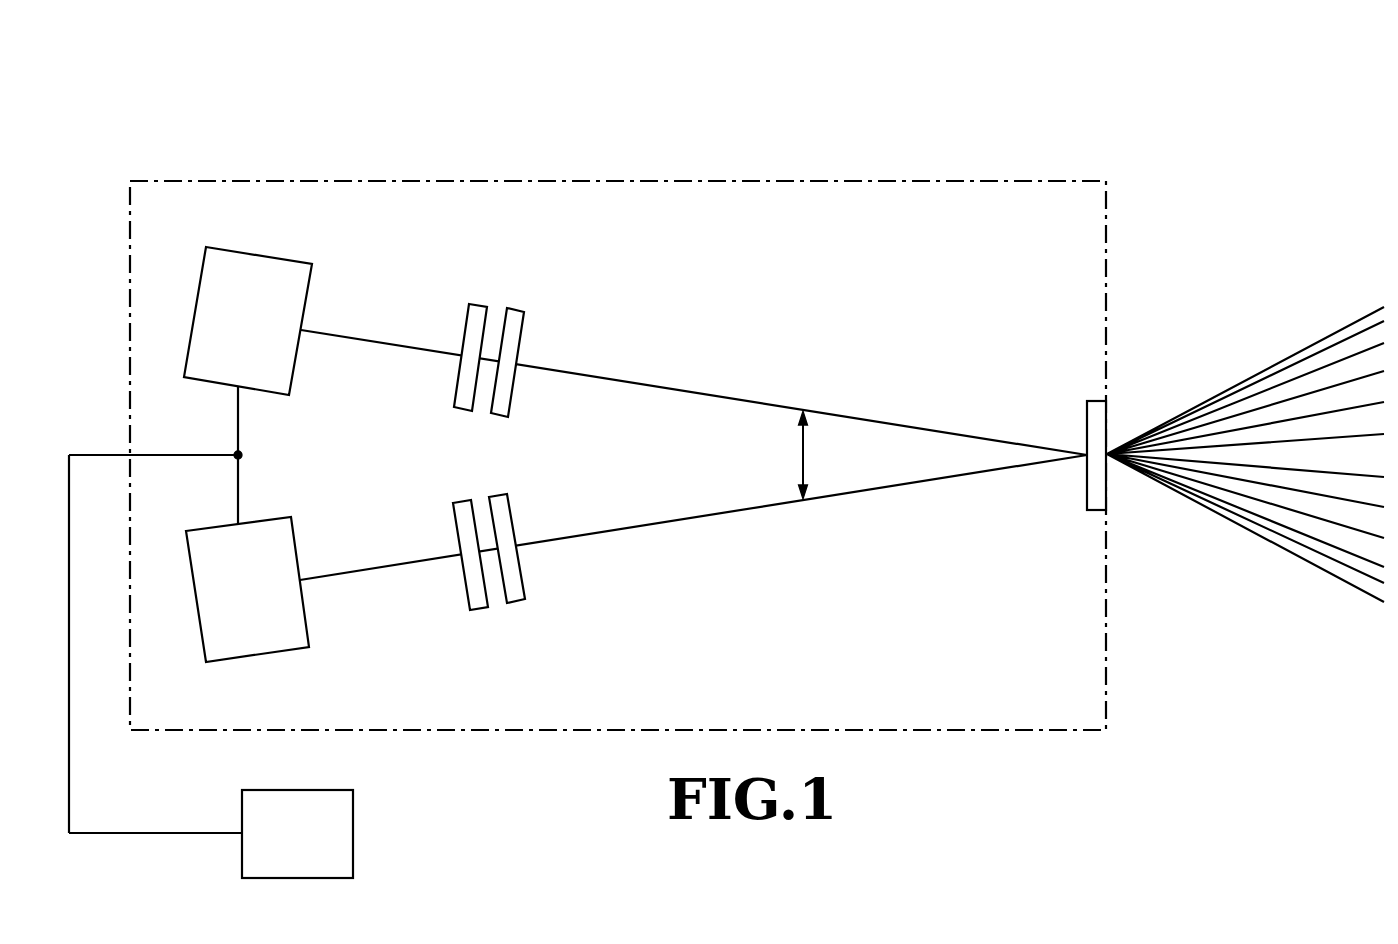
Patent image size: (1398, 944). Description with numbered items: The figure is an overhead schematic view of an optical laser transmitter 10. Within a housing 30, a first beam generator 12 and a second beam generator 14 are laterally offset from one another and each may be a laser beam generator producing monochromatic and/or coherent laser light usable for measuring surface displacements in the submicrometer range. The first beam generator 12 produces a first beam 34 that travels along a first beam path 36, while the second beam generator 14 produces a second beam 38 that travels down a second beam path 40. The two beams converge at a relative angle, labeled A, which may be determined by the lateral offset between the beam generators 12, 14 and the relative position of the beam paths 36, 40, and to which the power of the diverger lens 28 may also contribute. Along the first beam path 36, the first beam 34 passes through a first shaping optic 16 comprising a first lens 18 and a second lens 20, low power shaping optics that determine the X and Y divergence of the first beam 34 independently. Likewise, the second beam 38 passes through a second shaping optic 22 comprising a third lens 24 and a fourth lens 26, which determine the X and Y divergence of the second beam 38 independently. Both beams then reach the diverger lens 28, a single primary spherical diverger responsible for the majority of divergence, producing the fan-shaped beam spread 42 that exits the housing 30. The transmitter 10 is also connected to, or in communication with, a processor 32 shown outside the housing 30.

The optical laser transmitter 10 is at (1066, 99).
The first beam generator 12 is at (228, 602).
The second beam generator 14 is at (268, 334).
The first shaping optic 16 is at (497, 583).
The first lens 18 is at (467, 590).
The second lens 20 is at (543, 548).
The second shaping optic 22 is at (496, 328).
The third lens 24 is at (464, 322).
The fourth lens 26 is at (527, 323).
The diverger lens 28 is at (1087, 427).
The housing 30 is at (206, 172).
The processor 32 is at (318, 846).
The first beam 34 is at (693, 540).
The first beam path 36 is at (717, 526).
The second beam 38 is at (694, 371).
The second beam path 40 is at (715, 386).
The beam spread 42 is at (1231, 366).